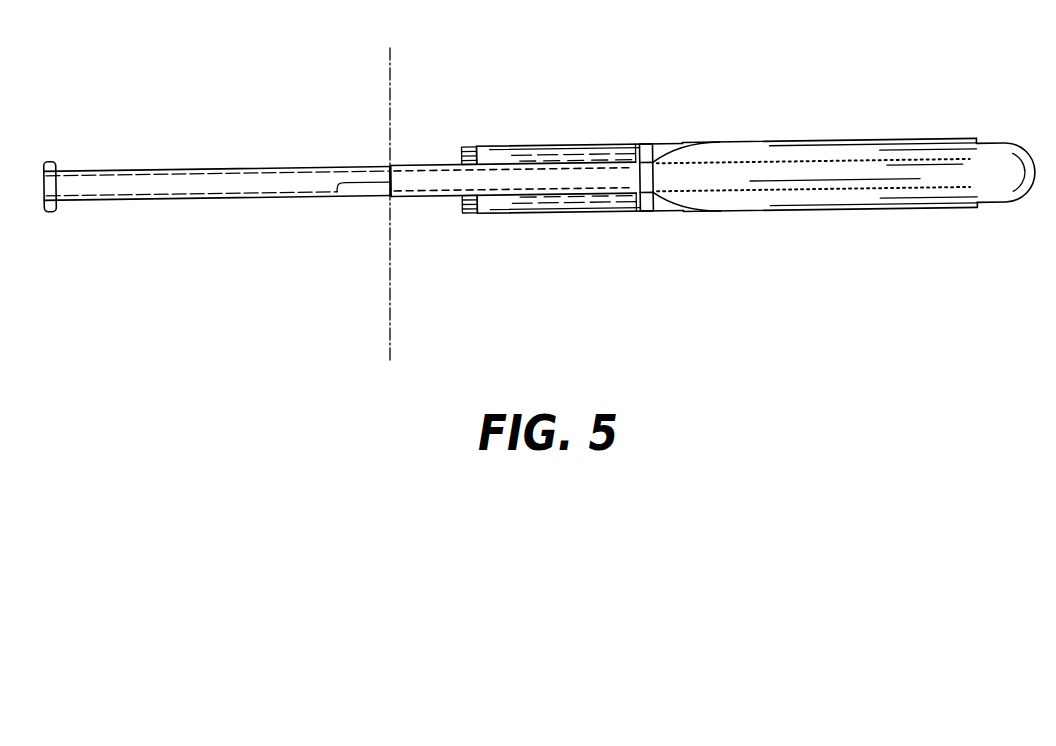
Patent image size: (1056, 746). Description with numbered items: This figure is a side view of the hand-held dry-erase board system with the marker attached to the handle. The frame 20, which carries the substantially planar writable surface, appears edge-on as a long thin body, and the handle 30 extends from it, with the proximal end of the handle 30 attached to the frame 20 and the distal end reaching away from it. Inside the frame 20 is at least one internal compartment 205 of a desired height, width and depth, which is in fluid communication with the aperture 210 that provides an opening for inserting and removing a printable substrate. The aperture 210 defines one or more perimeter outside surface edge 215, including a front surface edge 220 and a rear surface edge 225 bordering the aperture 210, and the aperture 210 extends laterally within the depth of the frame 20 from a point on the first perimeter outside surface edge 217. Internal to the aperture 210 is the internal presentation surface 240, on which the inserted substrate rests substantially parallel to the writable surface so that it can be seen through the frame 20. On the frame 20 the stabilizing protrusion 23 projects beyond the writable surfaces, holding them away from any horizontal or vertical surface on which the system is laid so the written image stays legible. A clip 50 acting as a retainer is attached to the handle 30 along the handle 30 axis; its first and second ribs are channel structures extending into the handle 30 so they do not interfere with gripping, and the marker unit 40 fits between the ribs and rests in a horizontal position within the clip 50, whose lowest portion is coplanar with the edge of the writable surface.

The frame 20 is at (380, 243).
The stabilizing protrusion 23 is at (56, 163).
The handle 30 is at (795, 249).
The marker unit 40 is at (619, 205).
The clip 50 is at (946, 207).
The internal compartment 205 is at (402, 178).
The aperture 210 is at (217, 196).
The perimeter outside surface edge 215 is at (630, 177).
The first perimeter outside surface edge 217 is at (340, 190).
The front surface edge 220 is at (178, 172).
The rear surface edge 225 is at (183, 200).
The internal presentation surface 240 is at (107, 187).